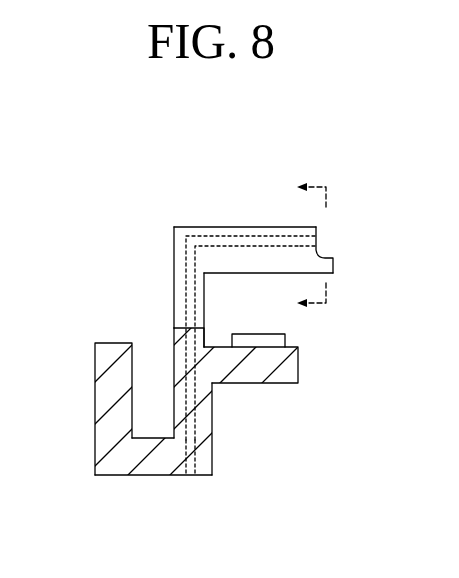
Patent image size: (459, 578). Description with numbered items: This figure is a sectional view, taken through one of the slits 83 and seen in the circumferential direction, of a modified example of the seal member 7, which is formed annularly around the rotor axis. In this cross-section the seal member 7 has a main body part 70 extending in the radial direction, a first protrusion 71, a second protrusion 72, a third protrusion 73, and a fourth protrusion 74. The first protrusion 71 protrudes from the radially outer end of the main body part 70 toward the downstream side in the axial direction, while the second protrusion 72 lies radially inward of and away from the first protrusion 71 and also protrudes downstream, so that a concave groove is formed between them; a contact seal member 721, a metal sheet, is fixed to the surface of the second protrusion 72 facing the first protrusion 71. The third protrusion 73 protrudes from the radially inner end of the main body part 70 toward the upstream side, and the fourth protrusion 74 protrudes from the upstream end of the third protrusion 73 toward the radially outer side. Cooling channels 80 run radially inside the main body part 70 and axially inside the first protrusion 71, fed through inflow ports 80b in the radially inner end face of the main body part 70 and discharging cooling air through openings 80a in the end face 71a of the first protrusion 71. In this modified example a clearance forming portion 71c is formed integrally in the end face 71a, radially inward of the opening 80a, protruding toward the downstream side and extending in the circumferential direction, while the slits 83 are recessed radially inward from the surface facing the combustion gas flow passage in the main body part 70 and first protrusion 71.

The seal member 7 is at (343, 149).
The main body part 70 is at (198, 455).
The first protrusion 71 is at (197, 232).
The end face 71a is at (318, 228).
The clearance forming portion 71c is at (333, 262).
The second protrusion 72 is at (265, 378).
The contact seal member 721 is at (290, 340).
The third protrusion 73 is at (125, 470).
The fourth protrusion 74 is at (105, 412).
The cooling channels 80 is at (243, 245).
The openings 80a is at (320, 242).
The inflow ports 80b is at (188, 477).
The slits 83 is at (176, 328).